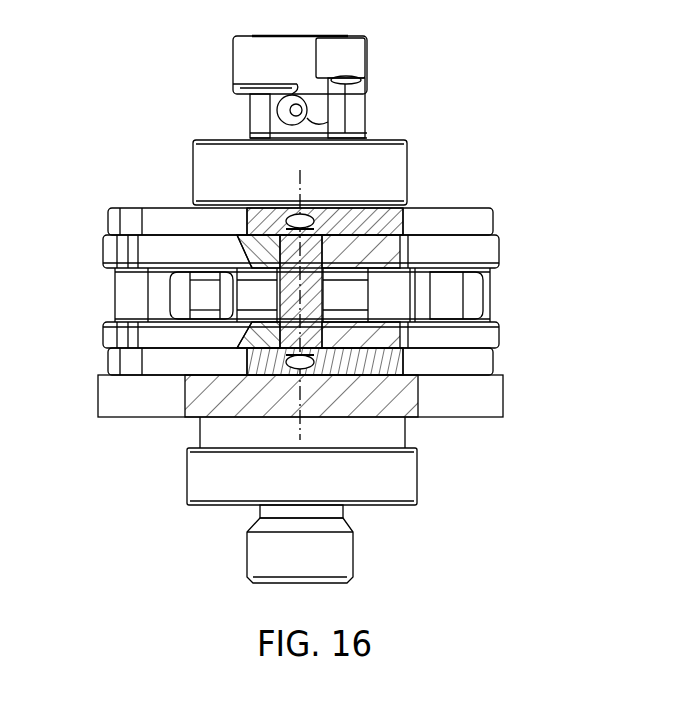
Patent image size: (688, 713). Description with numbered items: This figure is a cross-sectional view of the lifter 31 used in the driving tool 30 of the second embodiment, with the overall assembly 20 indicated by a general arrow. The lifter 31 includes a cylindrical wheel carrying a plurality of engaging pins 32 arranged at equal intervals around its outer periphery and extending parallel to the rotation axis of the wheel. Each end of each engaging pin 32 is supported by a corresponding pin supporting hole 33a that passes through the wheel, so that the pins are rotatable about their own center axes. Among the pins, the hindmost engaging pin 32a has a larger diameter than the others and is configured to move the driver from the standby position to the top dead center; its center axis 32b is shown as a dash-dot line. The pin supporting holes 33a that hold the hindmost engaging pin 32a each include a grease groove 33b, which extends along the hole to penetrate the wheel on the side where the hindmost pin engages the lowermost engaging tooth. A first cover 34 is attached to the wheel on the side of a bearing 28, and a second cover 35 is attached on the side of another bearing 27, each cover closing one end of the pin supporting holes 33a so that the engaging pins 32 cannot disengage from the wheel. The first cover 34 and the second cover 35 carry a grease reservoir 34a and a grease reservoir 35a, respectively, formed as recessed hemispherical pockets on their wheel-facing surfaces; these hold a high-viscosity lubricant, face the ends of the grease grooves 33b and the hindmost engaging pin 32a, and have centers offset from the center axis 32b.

The rotary joint 20 is at (526, 108).
The bearing 27 is at (397, 477).
The bearing 28 is at (213, 172).
The driving tool 30 is at (536, 55).
The lifter 31 is at (511, 173).
The engaging pins 32 is at (450, 303).
The hindmost engaging pin 32a is at (235, 292).
The center axis 32b is at (330, 404).
The pin supporting hole 33a is at (222, 215).
The grease groove 33b is at (325, 283).
The first cover 34 is at (261, 193).
The grease reservoir 34a is at (353, 205).
The second cover 35 is at (311, 377).
The grease reservoir 35a is at (365, 366).